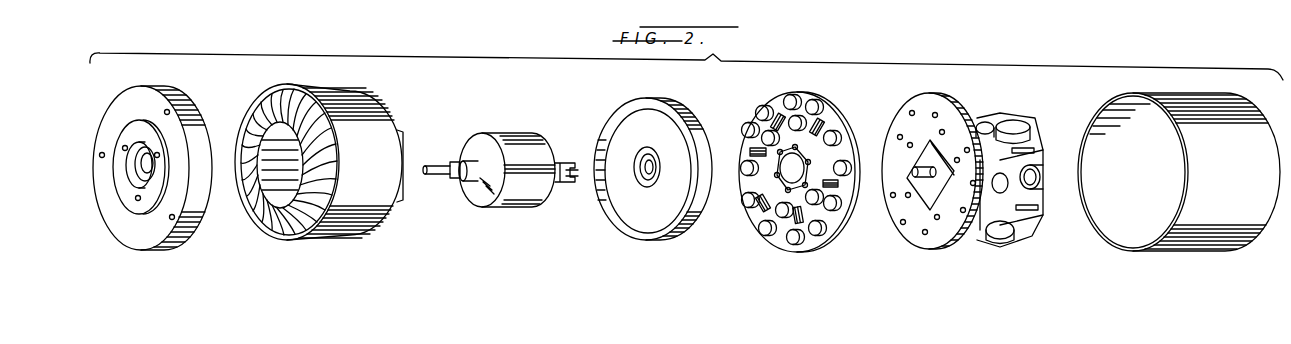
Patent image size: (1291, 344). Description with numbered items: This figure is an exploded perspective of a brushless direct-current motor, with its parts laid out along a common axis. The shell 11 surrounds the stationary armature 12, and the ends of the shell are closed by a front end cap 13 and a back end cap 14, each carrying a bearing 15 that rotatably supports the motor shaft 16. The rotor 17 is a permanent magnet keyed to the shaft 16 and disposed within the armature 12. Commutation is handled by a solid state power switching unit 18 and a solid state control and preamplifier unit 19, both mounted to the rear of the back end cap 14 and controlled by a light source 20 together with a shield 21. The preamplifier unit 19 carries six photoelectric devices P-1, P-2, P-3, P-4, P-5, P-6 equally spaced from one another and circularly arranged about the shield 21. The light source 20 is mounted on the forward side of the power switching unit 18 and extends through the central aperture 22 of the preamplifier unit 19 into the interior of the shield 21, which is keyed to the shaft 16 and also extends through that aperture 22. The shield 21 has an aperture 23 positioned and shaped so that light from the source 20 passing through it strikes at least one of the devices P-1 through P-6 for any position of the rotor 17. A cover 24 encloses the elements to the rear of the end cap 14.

The shell 11 is at (328, 241).
The stationary armature 12 is at (277, 223).
The front end cap 13 is at (112, 108).
The back end cap 14 is at (688, 110).
The bearings 15 is at (143, 170).
The motor shaft 16 is at (441, 176).
The rotor 17 is at (510, 206).
The solid state power switching unit 18 is at (987, 255).
The solid state control and preamplifier unit 19 is at (798, 187).
The light source 20 is at (917, 198).
The shield 21 is at (563, 184).
The central aperture 22 is at (780, 160).
The aperture 23 is at (582, 175).
The cover 24 is at (1167, 260).
The photoelectric device P-1 is at (772, 214).
The photoelectric device P-2 is at (790, 168).
The photoelectric device P-3 is at (752, 124).
The photoelectric device P-4 is at (828, 122).
The photoelectric device P-5 is at (802, 168).
The photoelectric device P-6 is at (800, 207).